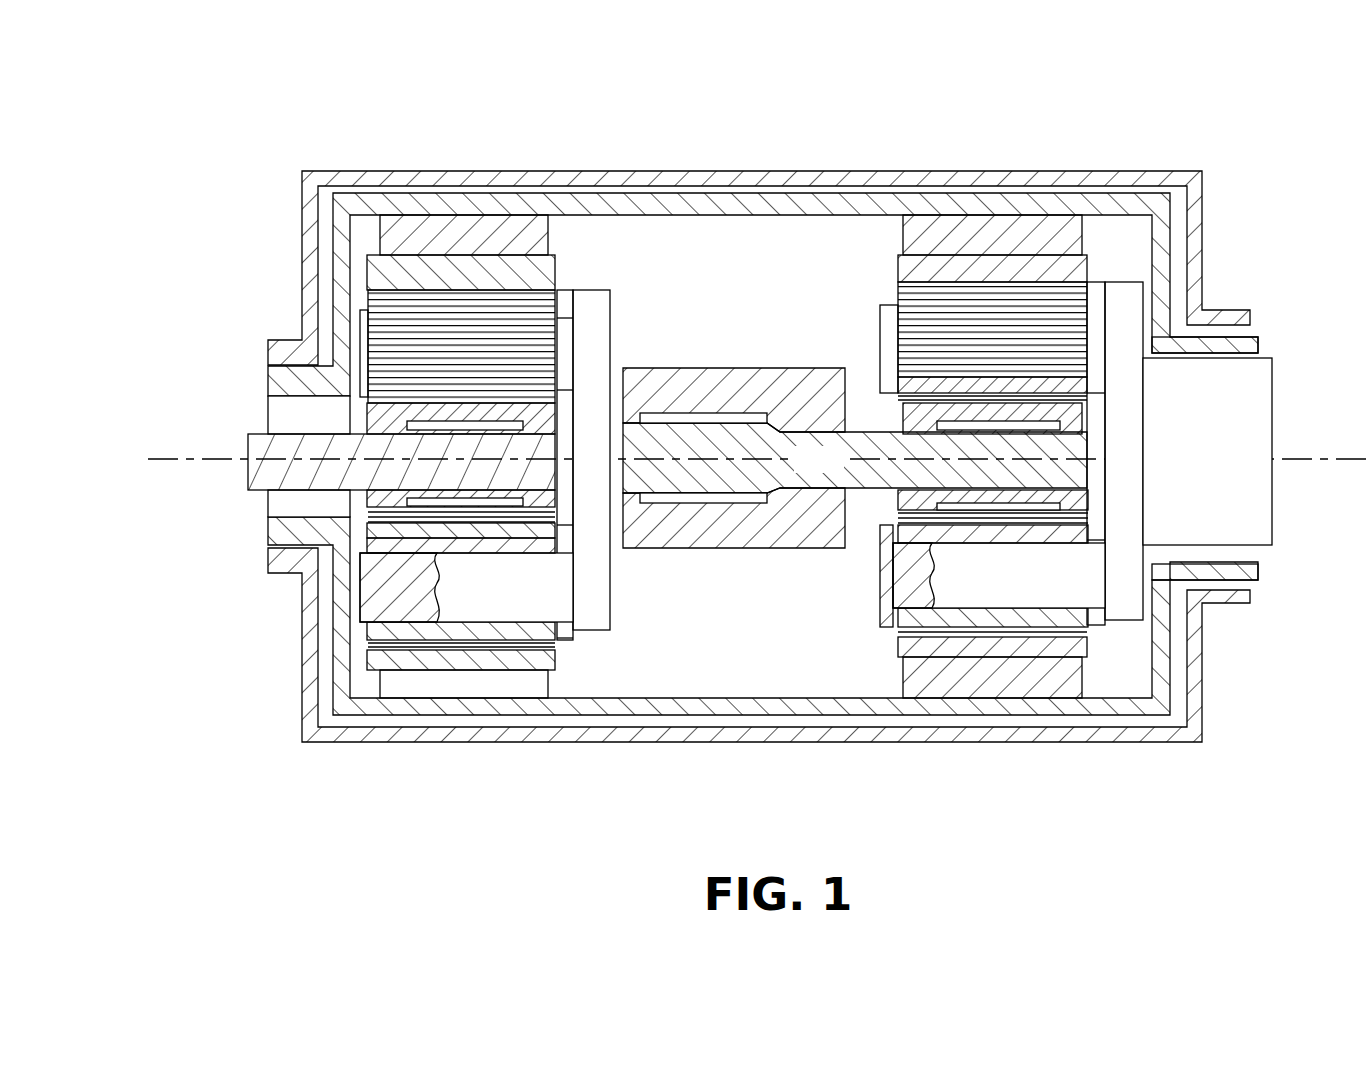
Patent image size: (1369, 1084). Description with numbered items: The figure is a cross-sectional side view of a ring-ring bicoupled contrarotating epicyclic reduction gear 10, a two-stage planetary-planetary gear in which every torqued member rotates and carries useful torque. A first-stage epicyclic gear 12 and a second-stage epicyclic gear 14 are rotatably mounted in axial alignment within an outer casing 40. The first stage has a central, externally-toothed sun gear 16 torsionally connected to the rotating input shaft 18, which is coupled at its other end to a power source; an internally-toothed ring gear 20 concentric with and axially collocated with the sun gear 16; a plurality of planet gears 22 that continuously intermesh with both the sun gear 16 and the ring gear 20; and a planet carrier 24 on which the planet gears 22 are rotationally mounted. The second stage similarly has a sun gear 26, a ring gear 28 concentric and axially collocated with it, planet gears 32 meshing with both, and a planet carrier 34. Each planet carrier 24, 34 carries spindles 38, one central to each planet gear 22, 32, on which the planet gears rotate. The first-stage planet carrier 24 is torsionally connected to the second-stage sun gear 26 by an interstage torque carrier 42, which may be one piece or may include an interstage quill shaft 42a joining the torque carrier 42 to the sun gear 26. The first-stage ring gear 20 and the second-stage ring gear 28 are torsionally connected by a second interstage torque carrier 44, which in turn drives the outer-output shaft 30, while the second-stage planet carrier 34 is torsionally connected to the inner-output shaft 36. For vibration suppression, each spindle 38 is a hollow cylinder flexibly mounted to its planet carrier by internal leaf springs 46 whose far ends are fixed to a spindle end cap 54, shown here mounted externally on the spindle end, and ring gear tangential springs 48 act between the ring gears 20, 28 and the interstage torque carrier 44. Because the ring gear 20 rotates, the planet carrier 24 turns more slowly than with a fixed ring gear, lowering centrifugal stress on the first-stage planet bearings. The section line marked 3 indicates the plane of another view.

The ring-ring bicoupled contrarotating epicyclic reduction gear 10 is at (1105, 798).
The first-stage epicyclic gear 12 is at (472, 163).
The second-stage epicyclic gear 14 is at (1100, 153).
The first-stage sun gear 16 is at (457, 413).
The input shaft 18 is at (218, 457).
The first-stage ring gear 20 is at (548, 256).
The first-stage planet gears 22 is at (527, 337).
The first-stage planet carrier 24 is at (613, 313).
The second-stage sun gear 26 is at (973, 408).
The second-stage ring gear 28 is at (898, 257).
The outer-output shaft 30 is at (1252, 345).
The second-stage planet gears 32 is at (910, 298).
The second-stage planet carrier 34 is at (1123, 603).
The inner-output shaft 36 is at (1273, 398).
The spindle 38 is at (502, 543).
The outer casing 40 is at (623, 175).
The interstage torque carrier 42 is at (728, 537).
The interstage quill shaft 42a is at (840, 474).
The interstage torque carrier 44 is at (745, 205).
The internal leaf springs 46 is at (566, 366).
The ring gear tangential springs 48 is at (422, 230).
The spindle end cap 54 is at (365, 358).
The section line 3 is at (992, 172).